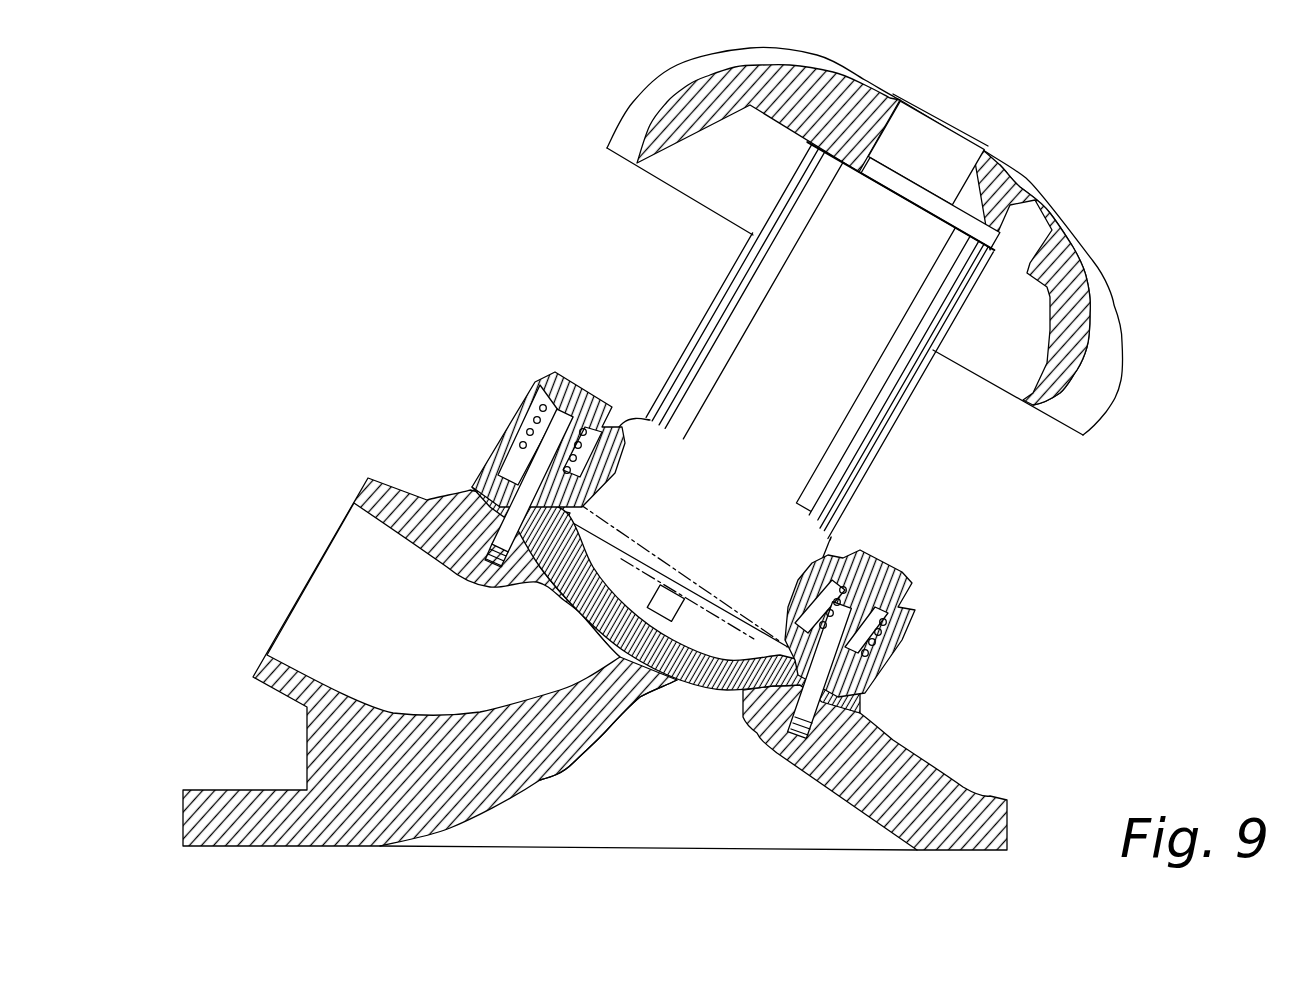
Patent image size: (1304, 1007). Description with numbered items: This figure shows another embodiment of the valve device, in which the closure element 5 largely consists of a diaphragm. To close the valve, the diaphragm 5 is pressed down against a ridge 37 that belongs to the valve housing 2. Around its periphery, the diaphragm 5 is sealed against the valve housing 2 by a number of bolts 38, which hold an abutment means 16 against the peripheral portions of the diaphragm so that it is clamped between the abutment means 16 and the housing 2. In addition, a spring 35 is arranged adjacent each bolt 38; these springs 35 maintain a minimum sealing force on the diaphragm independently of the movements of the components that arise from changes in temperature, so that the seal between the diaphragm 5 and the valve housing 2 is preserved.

The valve housing 2 is at (952, 761).
The closure element 5 is at (708, 690).
The abutment means 16 is at (875, 685).
The spring 35 is at (527, 405).
The ridge 37 is at (633, 677).
The bolts 38 is at (600, 382).